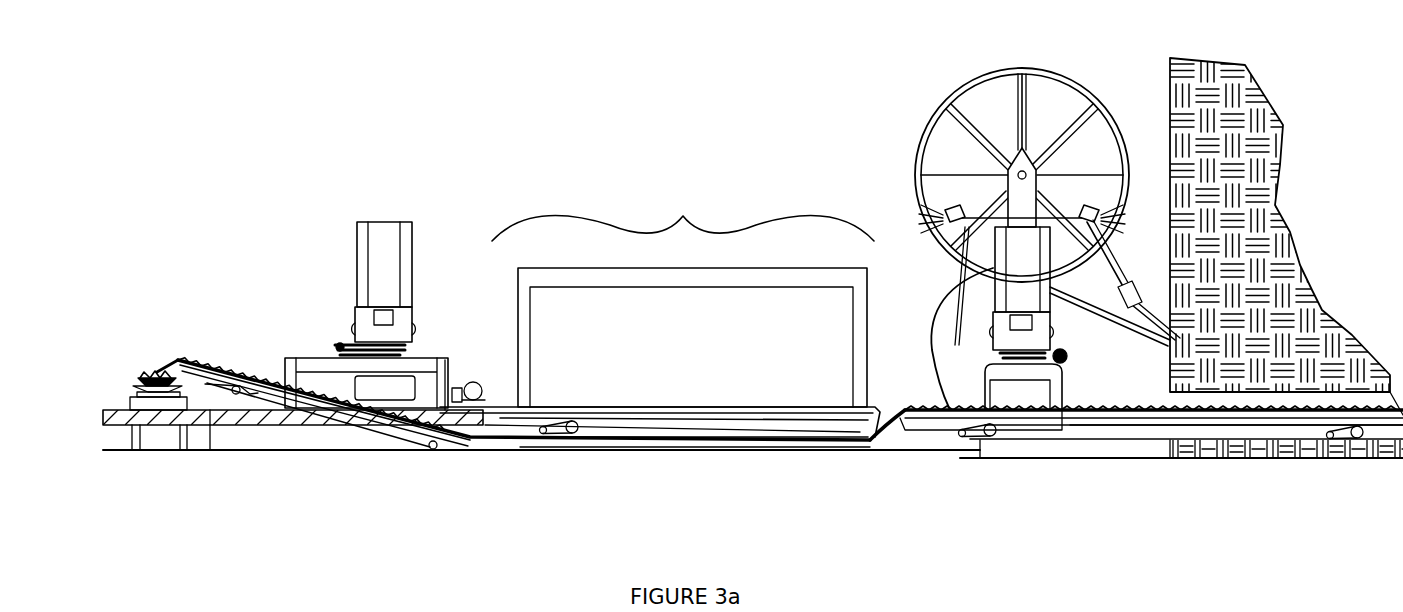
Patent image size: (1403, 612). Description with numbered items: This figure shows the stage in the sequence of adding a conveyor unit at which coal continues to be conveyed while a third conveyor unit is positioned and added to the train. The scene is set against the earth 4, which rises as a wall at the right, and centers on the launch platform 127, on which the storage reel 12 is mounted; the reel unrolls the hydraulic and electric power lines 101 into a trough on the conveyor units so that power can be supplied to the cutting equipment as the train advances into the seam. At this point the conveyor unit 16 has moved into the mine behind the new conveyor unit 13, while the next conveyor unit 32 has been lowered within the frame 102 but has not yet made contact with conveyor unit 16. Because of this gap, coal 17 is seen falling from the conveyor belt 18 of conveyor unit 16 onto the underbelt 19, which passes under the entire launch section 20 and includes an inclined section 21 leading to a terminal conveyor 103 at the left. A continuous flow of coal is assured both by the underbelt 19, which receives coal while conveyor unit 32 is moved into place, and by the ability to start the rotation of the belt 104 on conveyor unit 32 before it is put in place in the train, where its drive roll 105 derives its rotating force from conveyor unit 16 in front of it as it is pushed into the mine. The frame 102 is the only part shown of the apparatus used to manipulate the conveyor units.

The earth 4 is at (1283, 120).
The storage reel 12 is at (917, 152).
The new conveyor unit 13 is at (1380, 436).
The conveyor unit 16 is at (1068, 426).
The coal 17 is at (903, 410).
The conveyor belt 18 is at (1127, 410).
The underbelt 19 is at (935, 460).
The launch section 20 is at (683, 295).
The inclined section 21 is at (395, 440).
The conveyor unit 32 is at (653, 437).
The hydraulic and electric power lines 101 is at (952, 305).
The frame 102 is at (518, 318).
The terminal conveyor 103 is at (163, 362).
The belt 104 is at (748, 422).
The drive roll 105 is at (580, 422).
The launch platform 127 is at (1062, 375).